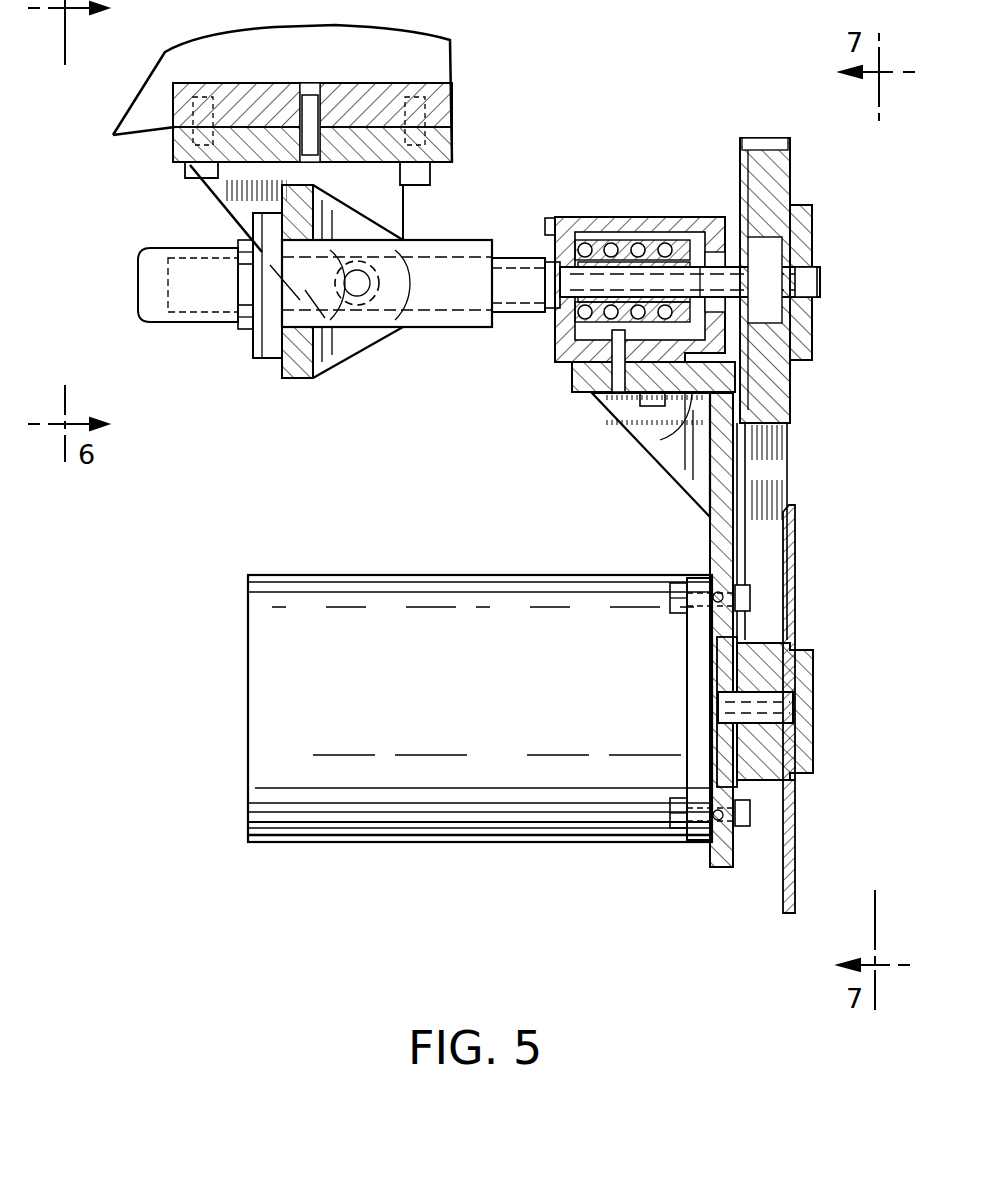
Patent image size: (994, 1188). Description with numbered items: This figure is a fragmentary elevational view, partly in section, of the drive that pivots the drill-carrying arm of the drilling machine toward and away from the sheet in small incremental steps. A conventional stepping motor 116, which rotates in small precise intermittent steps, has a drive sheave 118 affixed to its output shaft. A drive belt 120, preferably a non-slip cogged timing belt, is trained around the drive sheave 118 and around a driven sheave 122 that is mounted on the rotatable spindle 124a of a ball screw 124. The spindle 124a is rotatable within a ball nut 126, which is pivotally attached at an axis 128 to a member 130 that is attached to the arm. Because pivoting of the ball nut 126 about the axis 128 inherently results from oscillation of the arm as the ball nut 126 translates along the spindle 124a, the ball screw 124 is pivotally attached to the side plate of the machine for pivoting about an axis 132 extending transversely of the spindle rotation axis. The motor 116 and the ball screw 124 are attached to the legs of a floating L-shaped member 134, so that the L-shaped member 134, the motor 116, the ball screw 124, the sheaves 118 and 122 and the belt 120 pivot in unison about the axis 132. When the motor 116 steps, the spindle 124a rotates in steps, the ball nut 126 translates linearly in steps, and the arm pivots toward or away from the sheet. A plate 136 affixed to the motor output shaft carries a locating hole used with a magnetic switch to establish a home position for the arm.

The stepping motor 116 is at (462, 575).
The drive sheave 118 is at (762, 790).
The drive belt 120 is at (770, 600).
The driven sheave 122 is at (757, 142).
The ball screw 124 is at (515, 258).
The spindle 124a is at (605, 238).
The ball nut 126 is at (450, 250).
The axis 128 is at (360, 285).
The member 130 is at (233, 212).
The axis 132 is at (557, 330).
The floating L-shaped member 134 is at (660, 440).
The plate 136 is at (795, 882).